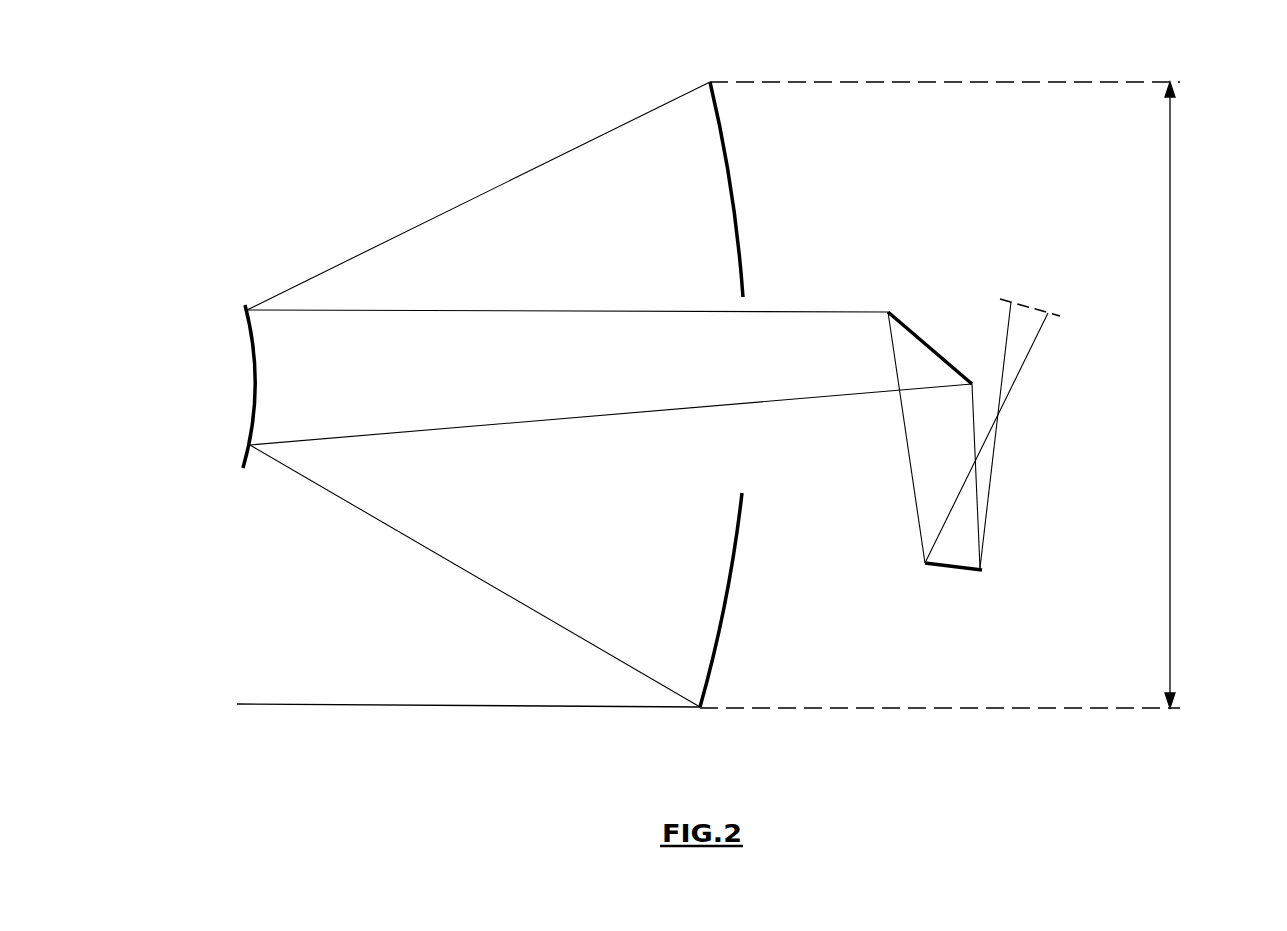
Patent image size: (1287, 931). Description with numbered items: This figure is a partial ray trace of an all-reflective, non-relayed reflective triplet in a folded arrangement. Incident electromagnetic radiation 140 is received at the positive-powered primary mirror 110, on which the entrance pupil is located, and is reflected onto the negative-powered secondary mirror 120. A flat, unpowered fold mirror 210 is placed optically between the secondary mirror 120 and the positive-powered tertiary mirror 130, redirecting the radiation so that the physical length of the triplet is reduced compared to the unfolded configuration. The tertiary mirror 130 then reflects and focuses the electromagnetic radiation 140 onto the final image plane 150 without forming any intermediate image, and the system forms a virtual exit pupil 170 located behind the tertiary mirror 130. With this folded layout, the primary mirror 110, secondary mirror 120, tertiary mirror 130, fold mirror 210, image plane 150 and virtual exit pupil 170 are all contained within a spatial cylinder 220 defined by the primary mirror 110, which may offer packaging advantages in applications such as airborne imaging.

The primary mirror 110 is at (757, 177).
The secondary mirror 120 is at (226, 396).
The tertiary mirror 130 is at (962, 598).
The incident electromagnetic radiation 140 is at (396, 85).
The image plane 150 is at (1019, 427).
The virtual exit pupil 170 is at (1046, 288).
The fold mirror 210 is at (931, 327).
The spatial cylinder 220 is at (1189, 372).